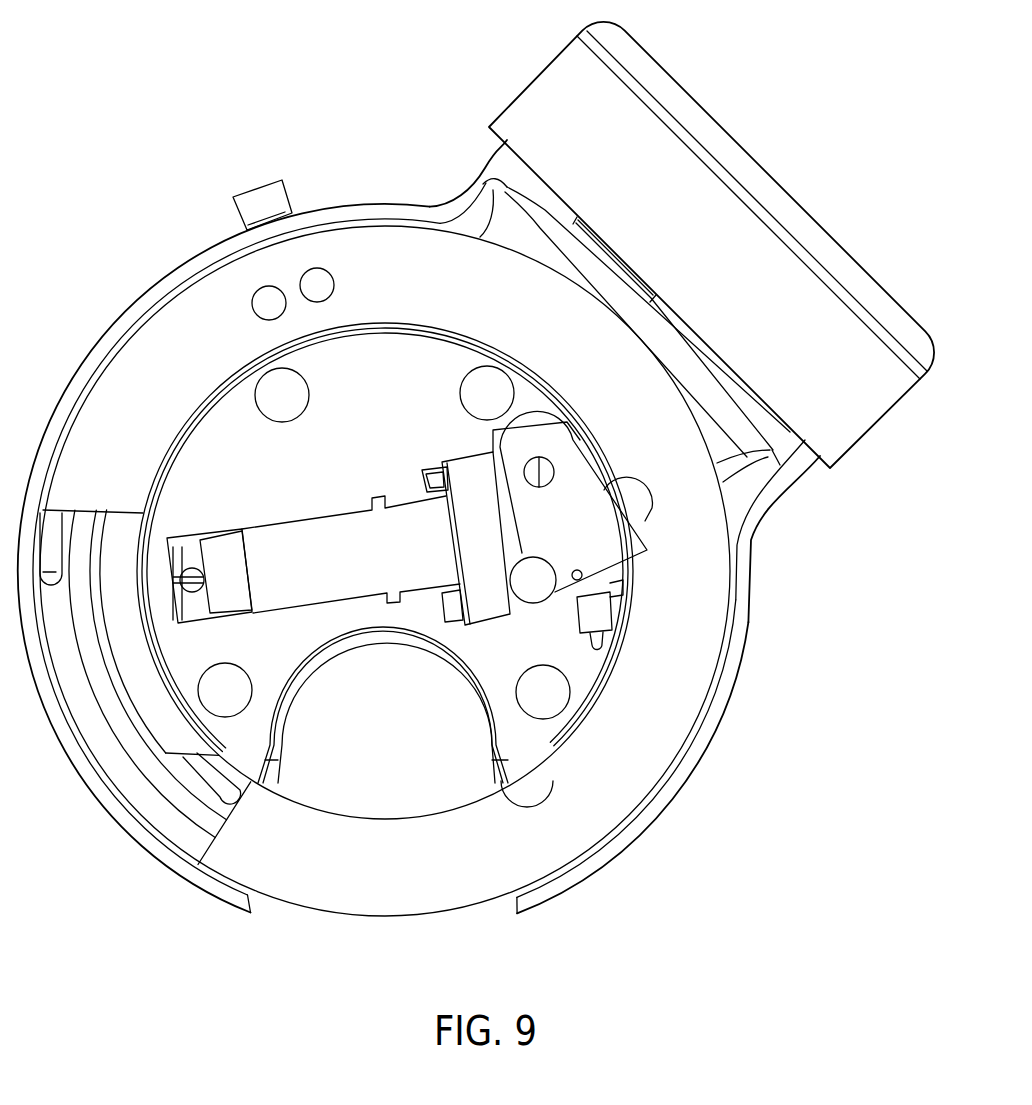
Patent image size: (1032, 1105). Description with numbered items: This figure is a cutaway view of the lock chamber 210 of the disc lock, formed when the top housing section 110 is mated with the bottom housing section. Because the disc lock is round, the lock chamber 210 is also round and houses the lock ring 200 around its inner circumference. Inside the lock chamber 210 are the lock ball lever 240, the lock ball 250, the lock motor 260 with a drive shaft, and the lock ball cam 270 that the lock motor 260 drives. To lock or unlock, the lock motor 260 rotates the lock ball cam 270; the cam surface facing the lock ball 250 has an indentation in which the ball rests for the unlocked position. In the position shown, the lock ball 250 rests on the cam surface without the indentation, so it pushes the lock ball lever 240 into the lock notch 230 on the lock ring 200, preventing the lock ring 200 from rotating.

The top housing section 110 is at (177, 268).
The lock ring 200 is at (138, 363).
The lock chamber 210 is at (123, 548).
The lock notch 230 is at (652, 525).
The lock ball lever 240 is at (607, 550).
The lock ball 250 is at (527, 580).
The lock motor 260 is at (305, 563).
The lock ball cam 270 is at (480, 568).